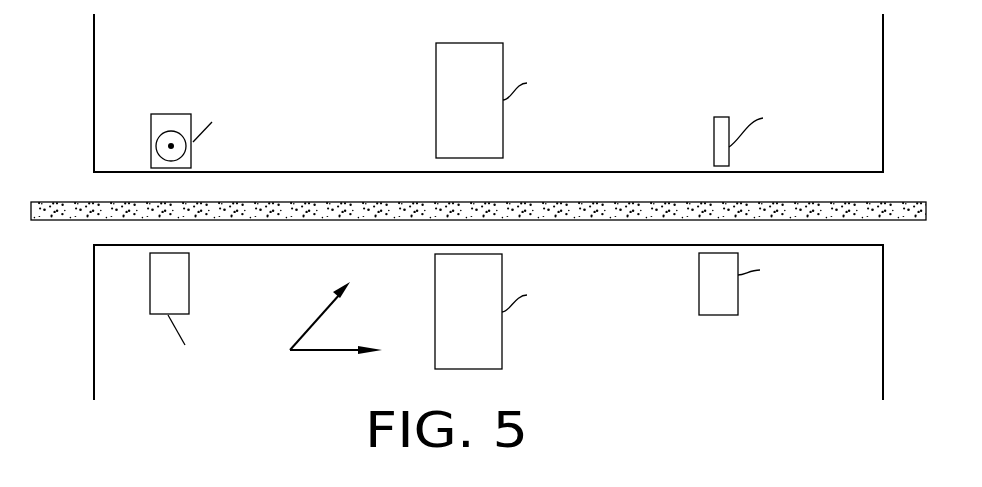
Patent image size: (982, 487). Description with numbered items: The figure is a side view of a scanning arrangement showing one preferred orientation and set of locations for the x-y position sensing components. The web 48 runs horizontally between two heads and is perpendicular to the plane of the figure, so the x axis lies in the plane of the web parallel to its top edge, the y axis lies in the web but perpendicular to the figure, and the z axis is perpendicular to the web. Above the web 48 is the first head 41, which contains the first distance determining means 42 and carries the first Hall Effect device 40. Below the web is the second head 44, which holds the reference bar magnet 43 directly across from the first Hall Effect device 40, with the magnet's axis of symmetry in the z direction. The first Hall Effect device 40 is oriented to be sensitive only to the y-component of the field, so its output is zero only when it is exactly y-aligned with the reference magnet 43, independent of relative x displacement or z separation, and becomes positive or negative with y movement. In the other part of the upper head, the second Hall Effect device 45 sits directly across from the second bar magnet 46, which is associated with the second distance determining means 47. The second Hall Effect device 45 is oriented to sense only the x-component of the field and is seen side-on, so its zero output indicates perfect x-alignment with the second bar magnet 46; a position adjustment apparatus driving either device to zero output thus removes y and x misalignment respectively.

The first Hall Effect device 40 is at (171, 146).
The first head 41 is at (343, 70).
The first distance determining means 42 is at (485, 110).
The reference bar magnet 43 is at (182, 280).
The second head 44 is at (565, 376).
The second Hall Effect device 45 is at (729, 127).
The second bar magnet 46 is at (725, 287).
The second distance determining means 47 is at (483, 322).
The web 48 is at (98, 202).